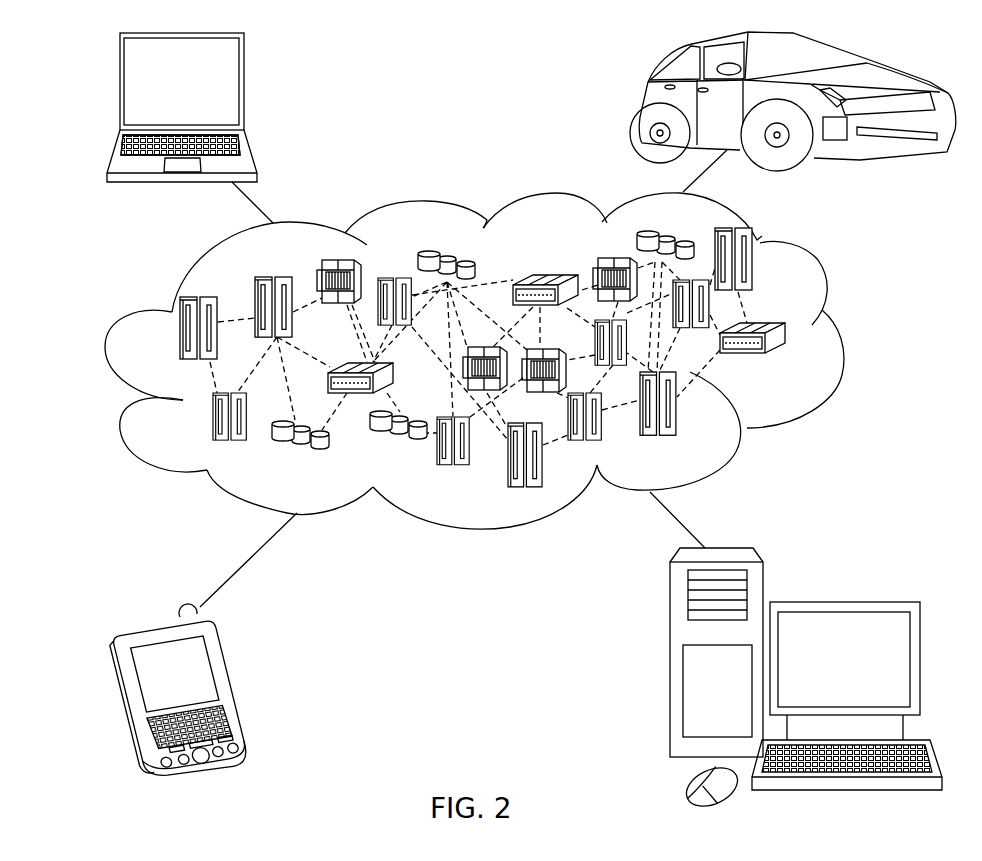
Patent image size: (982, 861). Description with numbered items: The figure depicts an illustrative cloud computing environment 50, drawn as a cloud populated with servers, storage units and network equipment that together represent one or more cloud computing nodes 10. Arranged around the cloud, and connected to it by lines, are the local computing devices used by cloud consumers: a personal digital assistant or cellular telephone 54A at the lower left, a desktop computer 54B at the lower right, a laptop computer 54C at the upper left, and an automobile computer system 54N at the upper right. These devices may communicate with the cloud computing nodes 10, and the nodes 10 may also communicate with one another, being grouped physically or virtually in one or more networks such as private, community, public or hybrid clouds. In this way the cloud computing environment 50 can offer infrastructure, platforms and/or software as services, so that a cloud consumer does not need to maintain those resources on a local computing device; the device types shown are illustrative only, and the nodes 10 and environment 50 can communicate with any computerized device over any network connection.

The cloud computing node 10 is at (788, 365).
The cloud computing environment 50 is at (499, 361).
The personal digital assistant (PDA) or cellular telephone 54A is at (232, 685).
The desktop computer 54B is at (842, 602).
The laptop computer 54C is at (244, 88).
The automobile computer system 54N is at (640, 100).